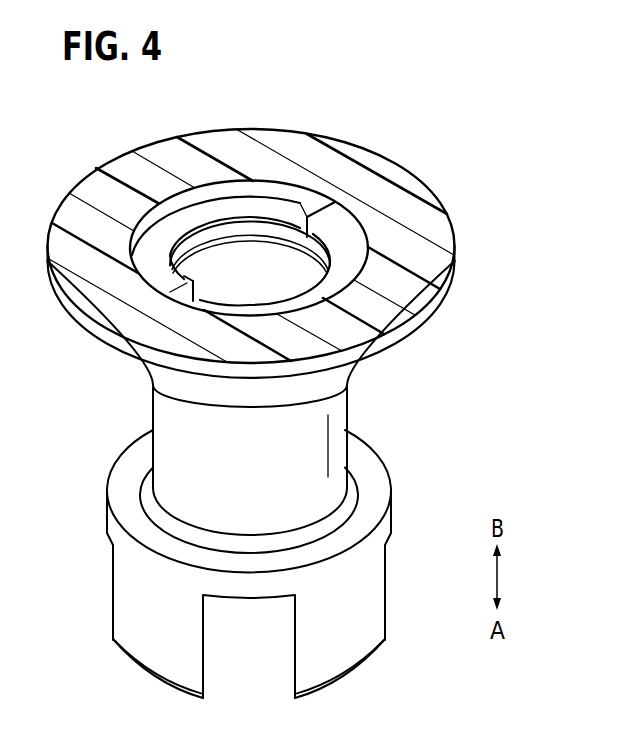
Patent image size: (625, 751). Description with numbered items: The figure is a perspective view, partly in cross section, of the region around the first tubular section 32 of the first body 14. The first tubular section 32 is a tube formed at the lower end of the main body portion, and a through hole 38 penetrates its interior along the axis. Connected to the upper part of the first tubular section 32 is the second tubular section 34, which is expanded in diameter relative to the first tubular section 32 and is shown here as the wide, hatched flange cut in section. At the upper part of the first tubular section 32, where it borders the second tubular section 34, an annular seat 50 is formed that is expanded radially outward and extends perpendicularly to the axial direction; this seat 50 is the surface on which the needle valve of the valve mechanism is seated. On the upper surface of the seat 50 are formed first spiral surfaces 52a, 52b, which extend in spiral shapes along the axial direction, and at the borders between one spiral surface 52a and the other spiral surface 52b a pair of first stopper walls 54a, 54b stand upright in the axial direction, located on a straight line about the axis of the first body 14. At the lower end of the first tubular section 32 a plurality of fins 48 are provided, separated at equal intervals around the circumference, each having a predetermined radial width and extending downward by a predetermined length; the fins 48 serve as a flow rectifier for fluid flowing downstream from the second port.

The first body 14 is at (216, 581).
The first tubular section 32 is at (315, 421).
The second tubular section 34 is at (98, 192).
The through hole 38 is at (245, 283).
The fins 48 is at (158, 662).
The annular seat 50 is at (260, 188).
The first spiral surface 52a is at (183, 217).
The first spiral surface 52b is at (348, 240).
The first stopper wall 54a is at (315, 202).
The first stopper wall 54b is at (183, 296).